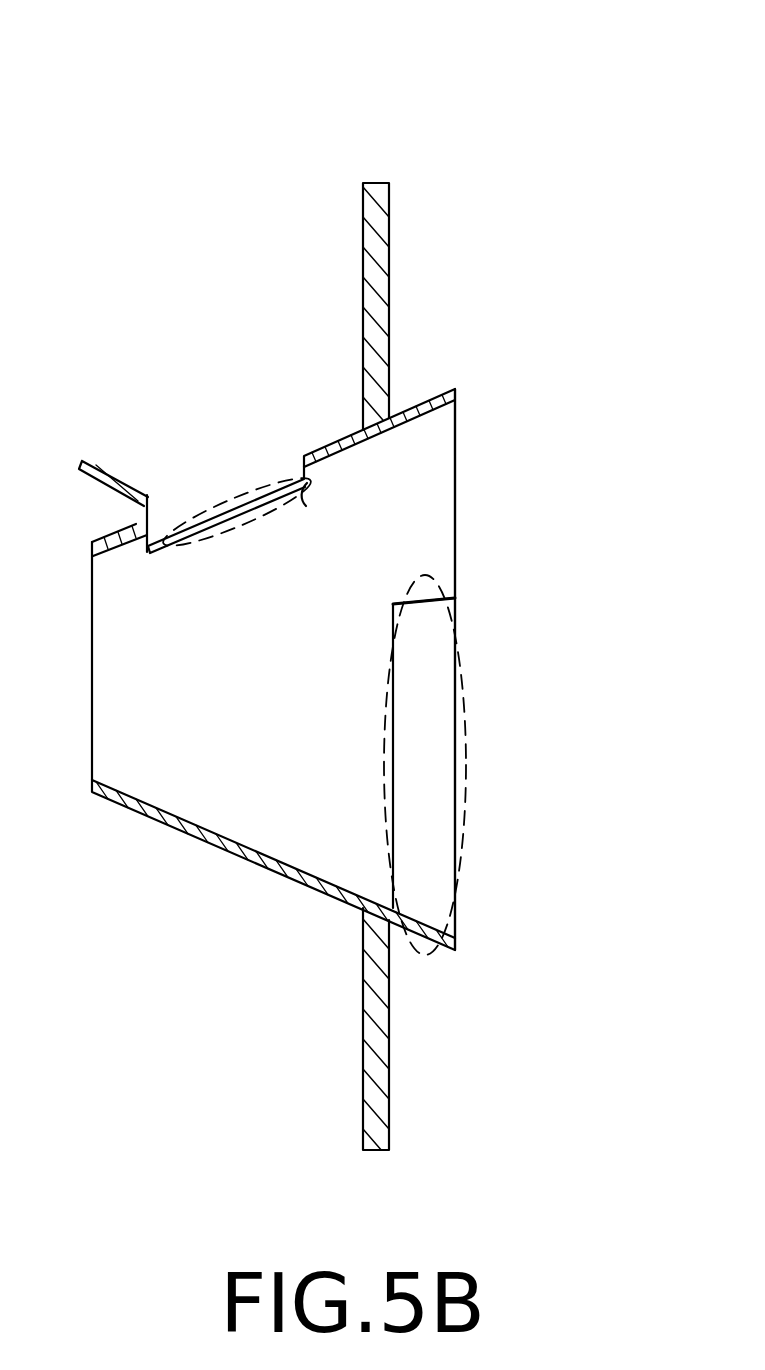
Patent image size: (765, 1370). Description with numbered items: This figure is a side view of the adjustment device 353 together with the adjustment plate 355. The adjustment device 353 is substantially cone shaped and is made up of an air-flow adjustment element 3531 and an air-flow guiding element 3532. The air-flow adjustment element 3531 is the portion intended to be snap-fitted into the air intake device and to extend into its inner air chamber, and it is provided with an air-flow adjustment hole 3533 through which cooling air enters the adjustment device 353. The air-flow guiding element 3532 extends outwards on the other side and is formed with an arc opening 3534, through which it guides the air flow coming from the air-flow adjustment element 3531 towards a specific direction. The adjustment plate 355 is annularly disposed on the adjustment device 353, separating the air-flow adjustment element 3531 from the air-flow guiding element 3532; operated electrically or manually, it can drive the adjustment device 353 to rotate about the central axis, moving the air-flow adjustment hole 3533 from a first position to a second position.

The adjustment device 353 is at (172, 1057).
The adjustment plate 355 is at (378, 183).
The air-flow adjustment element 3531 is at (207, 840).
The air-flow guiding element 3532 is at (408, 520).
The air-flow adjustment hole 3533 is at (233, 478).
The arc opening 3534 is at (462, 718).